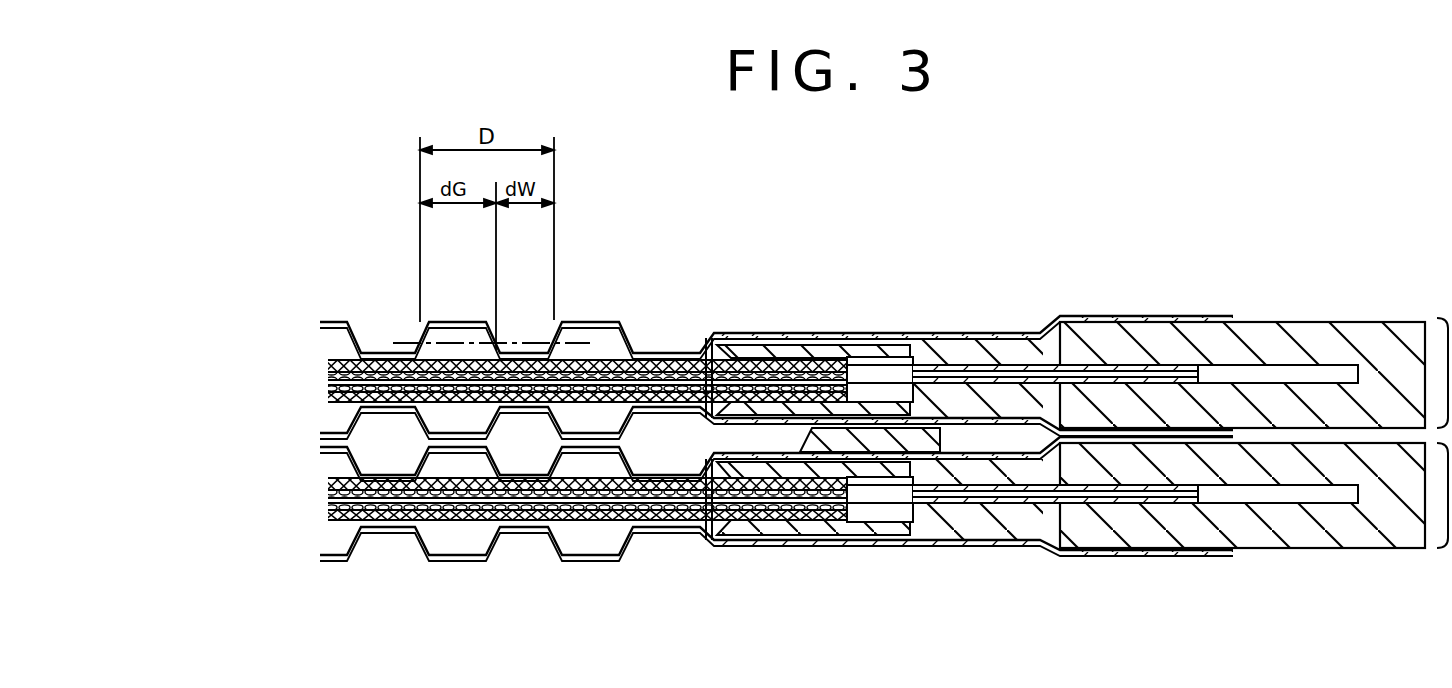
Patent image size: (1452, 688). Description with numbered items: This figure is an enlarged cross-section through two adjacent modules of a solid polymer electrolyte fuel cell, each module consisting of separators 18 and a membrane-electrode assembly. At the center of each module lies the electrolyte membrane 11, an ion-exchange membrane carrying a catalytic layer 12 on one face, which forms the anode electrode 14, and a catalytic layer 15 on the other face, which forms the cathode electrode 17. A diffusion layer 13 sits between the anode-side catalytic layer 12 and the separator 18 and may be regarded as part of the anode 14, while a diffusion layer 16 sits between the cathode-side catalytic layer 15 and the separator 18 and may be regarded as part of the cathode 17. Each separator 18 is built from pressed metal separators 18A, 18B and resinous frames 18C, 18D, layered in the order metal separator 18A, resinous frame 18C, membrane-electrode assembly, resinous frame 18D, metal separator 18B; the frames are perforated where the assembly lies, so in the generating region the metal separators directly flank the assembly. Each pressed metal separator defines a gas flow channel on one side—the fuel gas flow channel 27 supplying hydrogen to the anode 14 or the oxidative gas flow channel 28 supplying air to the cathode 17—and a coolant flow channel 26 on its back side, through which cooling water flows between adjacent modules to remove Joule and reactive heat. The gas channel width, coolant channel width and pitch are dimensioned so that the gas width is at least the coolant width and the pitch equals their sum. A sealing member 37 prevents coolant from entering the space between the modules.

The electrolyte membrane 11 is at (327, 383).
The catalytic layer 12 is at (335, 397).
The diffusion layer 13 is at (340, 407).
The electrode 14 is at (250, 392).
The catalytic layer 15 is at (335, 370).
The diffusion layer 16 is at (340, 355).
The electrode 17 is at (250, 318).
The separator 18 is at (1050, 248).
The metal separator 18A is at (813, 413).
The metal separator 18B is at (440, 320).
The resinous frame 18C is at (950, 403).
The resinous frame 18D is at (1013, 357).
The coolant flow channel 26 is at (548, 443).
The fuel gas flow channel 27 is at (600, 417).
The oxidative gas flow channel 28 is at (603, 340).
The sealing member 37 is at (875, 443).